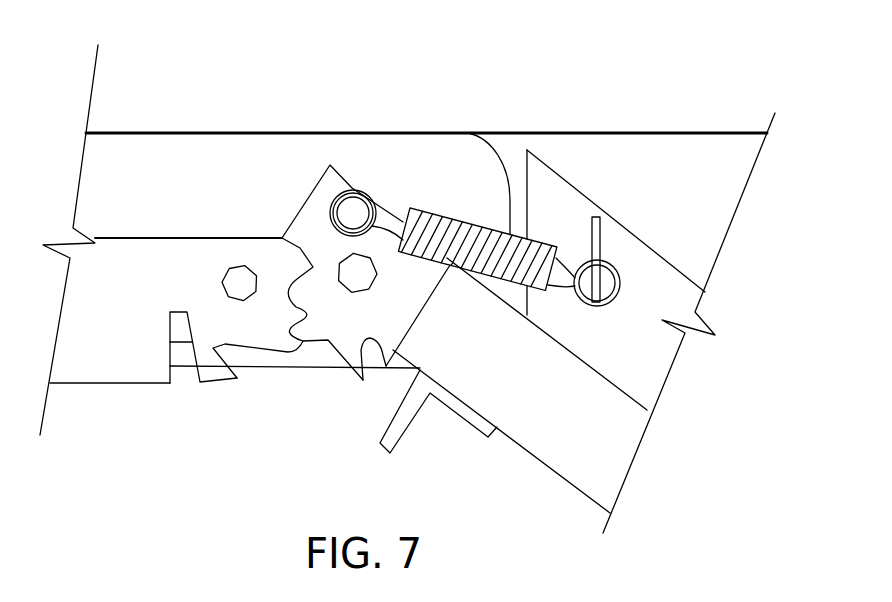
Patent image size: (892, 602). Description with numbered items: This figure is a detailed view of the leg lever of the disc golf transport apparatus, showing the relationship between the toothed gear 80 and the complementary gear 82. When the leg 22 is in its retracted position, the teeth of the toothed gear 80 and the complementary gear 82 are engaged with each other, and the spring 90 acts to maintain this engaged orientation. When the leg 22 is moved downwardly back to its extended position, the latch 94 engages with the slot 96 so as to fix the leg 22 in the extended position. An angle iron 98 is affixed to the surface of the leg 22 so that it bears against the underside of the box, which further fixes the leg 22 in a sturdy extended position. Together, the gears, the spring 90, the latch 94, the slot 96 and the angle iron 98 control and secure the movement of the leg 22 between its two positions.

The leg 22 is at (571, 473).
The toothed gear 80 is at (348, 352).
The complementary gear 82 is at (259, 345).
The spring 90 is at (458, 240).
The latch 94 is at (217, 372).
The slot 96 is at (371, 352).
The angle iron 98 is at (412, 410).